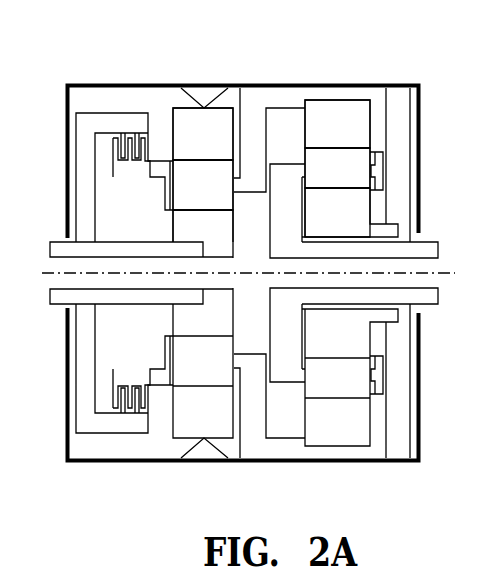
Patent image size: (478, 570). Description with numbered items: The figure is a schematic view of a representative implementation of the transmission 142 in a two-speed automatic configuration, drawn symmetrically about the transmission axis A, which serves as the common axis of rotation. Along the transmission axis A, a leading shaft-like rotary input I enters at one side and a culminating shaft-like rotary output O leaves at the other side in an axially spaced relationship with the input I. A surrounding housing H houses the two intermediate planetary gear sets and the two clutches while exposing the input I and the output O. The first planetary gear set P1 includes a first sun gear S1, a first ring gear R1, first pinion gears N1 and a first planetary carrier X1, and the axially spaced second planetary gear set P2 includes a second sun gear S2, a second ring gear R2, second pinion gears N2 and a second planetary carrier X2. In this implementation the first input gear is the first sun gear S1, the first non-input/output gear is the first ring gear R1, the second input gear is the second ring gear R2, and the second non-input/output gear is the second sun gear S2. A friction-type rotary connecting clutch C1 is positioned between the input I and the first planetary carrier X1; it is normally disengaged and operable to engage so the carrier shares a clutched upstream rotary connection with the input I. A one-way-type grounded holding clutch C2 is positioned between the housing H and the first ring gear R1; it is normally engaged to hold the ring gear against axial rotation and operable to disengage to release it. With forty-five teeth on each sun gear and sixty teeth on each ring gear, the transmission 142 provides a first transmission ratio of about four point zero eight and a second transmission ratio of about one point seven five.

The transmission 142 is at (60, 103).
The housing H is at (65, 130).
The connecting clutch C1 is at (113, 173).
The input I is at (53, 242).
The first planetary gear set P1 is at (178, 102).
The first ring gear R1 is at (203, 134).
The first pinion gears N1 is at (203, 185).
The first sun gear S1 is at (203, 226).
The holding clutch C2 is at (203, 85).
The first planetary carrier X1 is at (269, 140).
The second planetary carrier X2 is at (287, 211).
The output O is at (430, 242).
The second planetary gear set P2 is at (340, 95).
The second ring gear R2 is at (337, 124).
The second pinion gears N2 is at (337, 168).
The second sun gear S2 is at (337, 212).
The transmission axis A is at (45, 273).